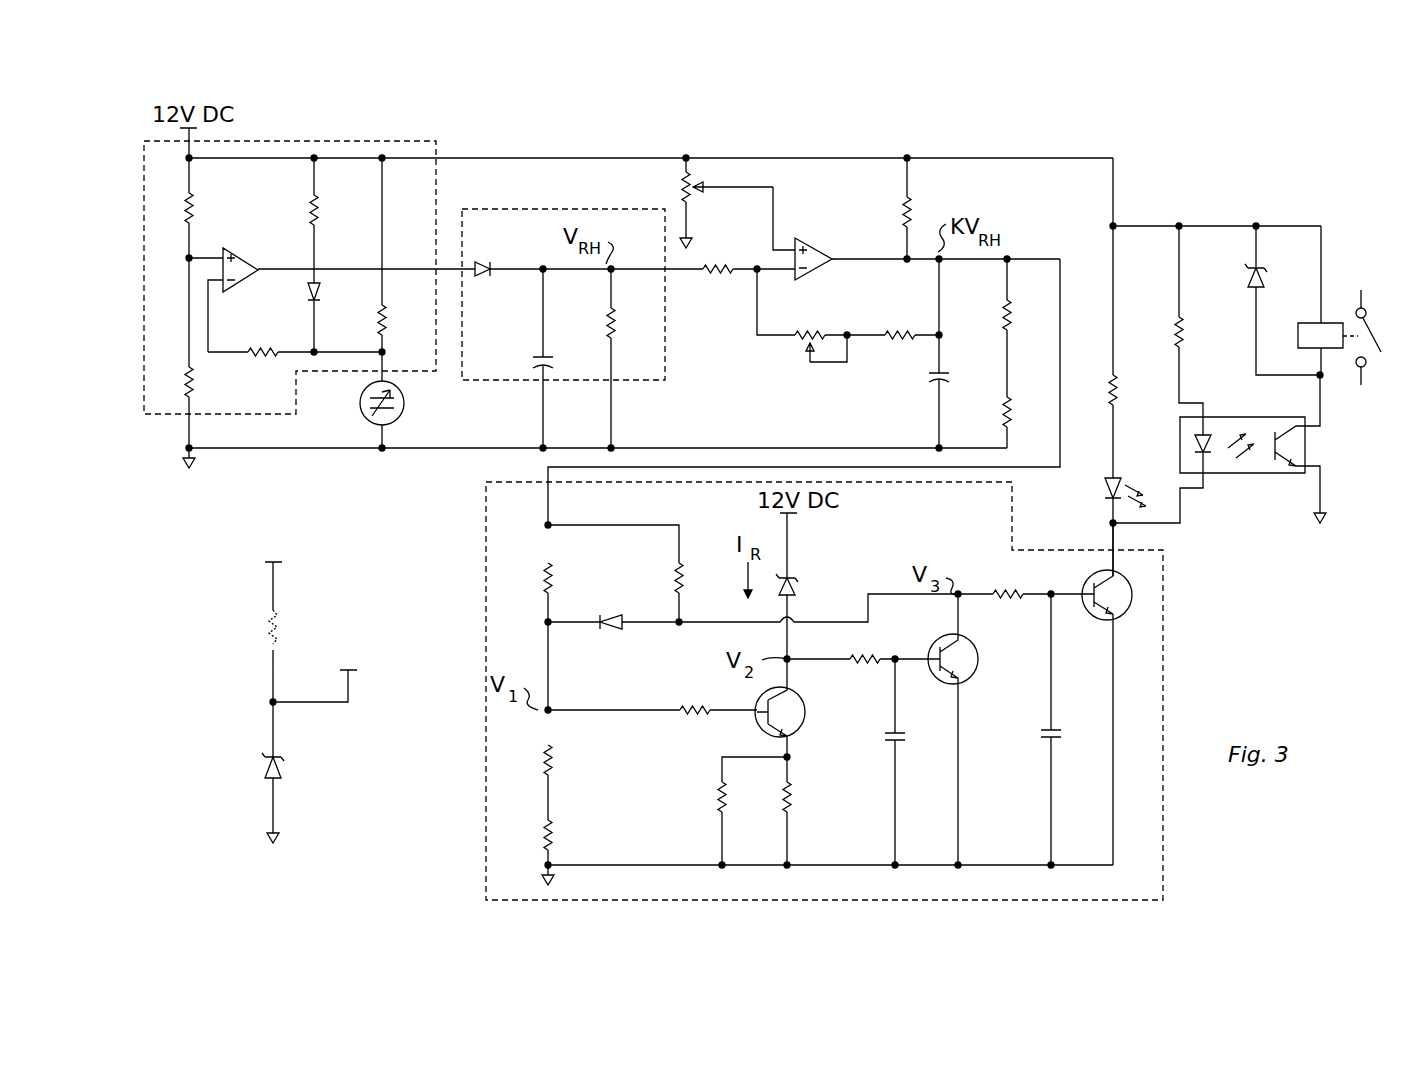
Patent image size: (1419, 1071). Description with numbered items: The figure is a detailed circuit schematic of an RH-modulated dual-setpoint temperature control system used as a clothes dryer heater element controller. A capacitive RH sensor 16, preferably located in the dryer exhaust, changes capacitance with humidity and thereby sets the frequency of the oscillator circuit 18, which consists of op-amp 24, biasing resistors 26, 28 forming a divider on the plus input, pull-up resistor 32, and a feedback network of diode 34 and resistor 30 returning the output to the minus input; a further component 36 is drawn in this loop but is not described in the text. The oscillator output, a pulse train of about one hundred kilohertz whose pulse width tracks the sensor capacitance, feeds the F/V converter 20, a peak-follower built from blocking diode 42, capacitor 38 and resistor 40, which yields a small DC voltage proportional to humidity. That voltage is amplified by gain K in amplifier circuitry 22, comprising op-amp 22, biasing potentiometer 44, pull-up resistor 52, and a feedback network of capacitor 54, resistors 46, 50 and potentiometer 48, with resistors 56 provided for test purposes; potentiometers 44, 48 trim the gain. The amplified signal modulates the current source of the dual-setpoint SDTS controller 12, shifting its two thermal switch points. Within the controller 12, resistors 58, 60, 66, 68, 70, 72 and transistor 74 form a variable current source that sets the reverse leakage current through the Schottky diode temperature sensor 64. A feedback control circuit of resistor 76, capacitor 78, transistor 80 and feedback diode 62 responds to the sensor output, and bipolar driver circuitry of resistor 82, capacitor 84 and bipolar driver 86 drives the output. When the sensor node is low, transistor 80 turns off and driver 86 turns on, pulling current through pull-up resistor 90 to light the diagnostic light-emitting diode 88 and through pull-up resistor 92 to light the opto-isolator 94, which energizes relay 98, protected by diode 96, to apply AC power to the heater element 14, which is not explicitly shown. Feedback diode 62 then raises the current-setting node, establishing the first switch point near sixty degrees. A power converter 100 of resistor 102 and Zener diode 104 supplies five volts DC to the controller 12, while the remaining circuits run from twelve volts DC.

The dual-setpoint SDTS temperature control circuit 12 is at (464, 712).
The heater element 14 is at (1382, 374).
The capacitive RH sensor 16 is at (404, 420).
The oscillator circuit 18 is at (440, 206).
The F/V converter 20 is at (666, 346).
The amplifier circuitry 22 is at (816, 266).
The op-amp 24 is at (246, 292).
The biasing resistor 26 is at (196, 203).
The biasing resistor 28 is at (196, 378).
The resistor 30 is at (258, 346).
The pull-up resistor 32 is at (320, 203).
The diode 34 is at (304, 300).
The heater resistor R10 RH 36 is at (390, 315).
The capacitor 38 is at (546, 362).
The resistor 40 is at (621, 315).
The blocking diode 42 is at (480, 277).
The biasing potentiometer 44 is at (696, 196).
The resistor 46 is at (720, 268).
The potentiometer 48 is at (791, 344).
The resistor 50 is at (894, 344).
The pull-up resistor 52 is at (910, 203).
The capacitor 54 is at (944, 372).
The resistors 56 is at (1006, 303).
The resistor 58 is at (544, 573).
The resistor 60 is at (676, 571).
The feedback diode 62 is at (620, 620).
The Schottky diode temperature sensor 64 is at (808, 573).
The resistor 66 is at (682, 710).
The resistor 68 is at (546, 755).
The resistor 70 is at (550, 827).
The resistor 72 is at (746, 802).
The transistor 74 is at (772, 750).
The resistor 76 is at (858, 662).
The capacitor 78 is at (876, 738).
The transistor 80 is at (940, 674).
The resistor 82 is at (998, 596).
The capacitor 84 is at (1028, 734).
The bipolar driver 86 is at (1090, 618).
The LED 88 is at (1120, 476).
The pull-up resistor 90 is at (1117, 395).
The pull-up resistor 92 is at (1182, 335).
The opto-isolator 94 is at (1230, 473).
The diode 96 is at (1248, 272).
The relay 98 is at (1338, 290).
The power converter 100 is at (234, 712).
The resistor 102 is at (290, 600).
The Zener diode 104 is at (266, 786).